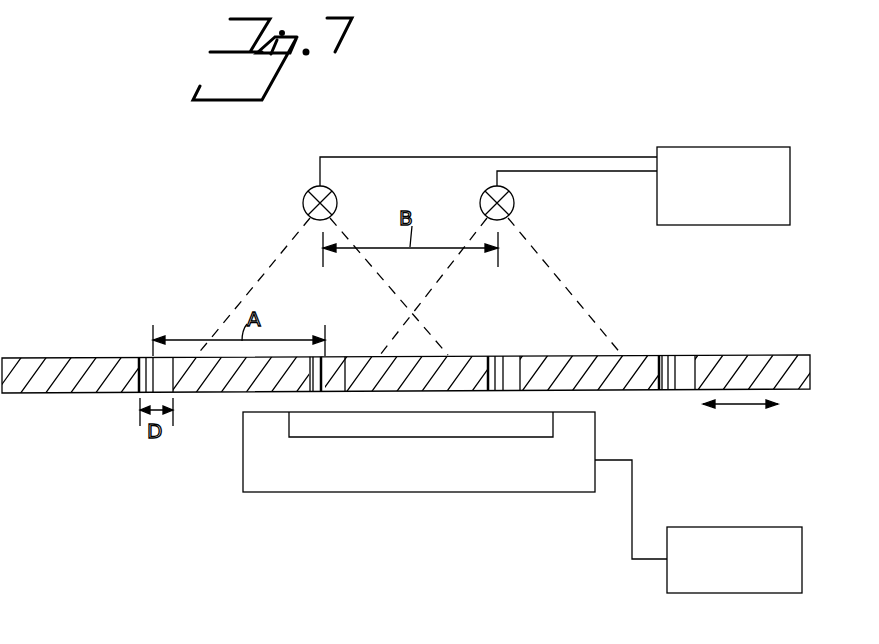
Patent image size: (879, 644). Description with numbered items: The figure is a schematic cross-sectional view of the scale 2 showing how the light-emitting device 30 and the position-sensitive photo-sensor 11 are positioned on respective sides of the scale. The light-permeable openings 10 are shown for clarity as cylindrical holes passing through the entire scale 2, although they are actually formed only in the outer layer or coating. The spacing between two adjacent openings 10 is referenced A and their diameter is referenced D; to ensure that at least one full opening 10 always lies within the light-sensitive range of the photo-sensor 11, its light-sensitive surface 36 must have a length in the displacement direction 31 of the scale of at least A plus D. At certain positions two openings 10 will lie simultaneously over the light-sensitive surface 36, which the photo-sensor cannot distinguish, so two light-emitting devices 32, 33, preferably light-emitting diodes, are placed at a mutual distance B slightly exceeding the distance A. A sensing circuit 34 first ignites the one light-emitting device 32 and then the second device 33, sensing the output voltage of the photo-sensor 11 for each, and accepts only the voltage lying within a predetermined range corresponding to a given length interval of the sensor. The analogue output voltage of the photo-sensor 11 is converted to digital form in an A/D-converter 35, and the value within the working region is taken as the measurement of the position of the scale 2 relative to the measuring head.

The scale 2 is at (809, 391).
The light-permeable openings 10 is at (145, 356).
The position-sensitive photo-sensor 11 is at (520, 420).
The light-emitting device 30 is at (420, 178).
The displacement direction 31 is at (745, 405).
The first light-emitting device 32 is at (304, 197).
The second light-emitting device 33 is at (513, 203).
The sensing circuit 34 is at (657, 209).
The A/D-converter 35 is at (754, 527).
The light-sensitive surface 36 is at (326, 412).